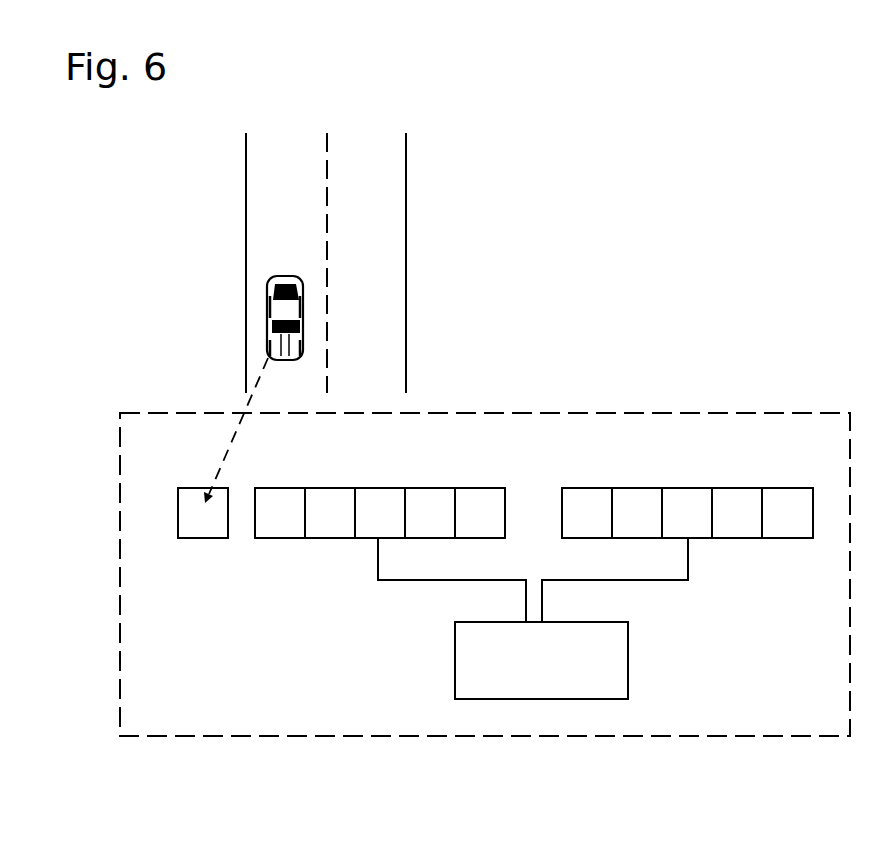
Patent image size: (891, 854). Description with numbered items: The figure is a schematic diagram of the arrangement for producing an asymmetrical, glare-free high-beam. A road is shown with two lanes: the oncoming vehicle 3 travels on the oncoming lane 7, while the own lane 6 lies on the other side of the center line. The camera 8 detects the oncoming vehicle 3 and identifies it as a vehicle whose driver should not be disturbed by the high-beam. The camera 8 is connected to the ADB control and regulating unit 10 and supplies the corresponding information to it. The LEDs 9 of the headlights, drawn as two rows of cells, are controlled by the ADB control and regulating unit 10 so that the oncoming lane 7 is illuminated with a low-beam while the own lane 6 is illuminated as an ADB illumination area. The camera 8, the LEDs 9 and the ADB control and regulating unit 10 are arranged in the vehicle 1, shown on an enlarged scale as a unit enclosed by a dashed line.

The vehicle 1 is at (485, 603).
The oncoming vehicle 3 is at (267, 323).
The own lane 6 is at (422, 263).
The oncoming lane 7 is at (229, 263).
The camera 8 is at (237, 554).
The LEDs 9 is at (283, 515).
The ADB control and regulating unit 10 is at (530, 709).